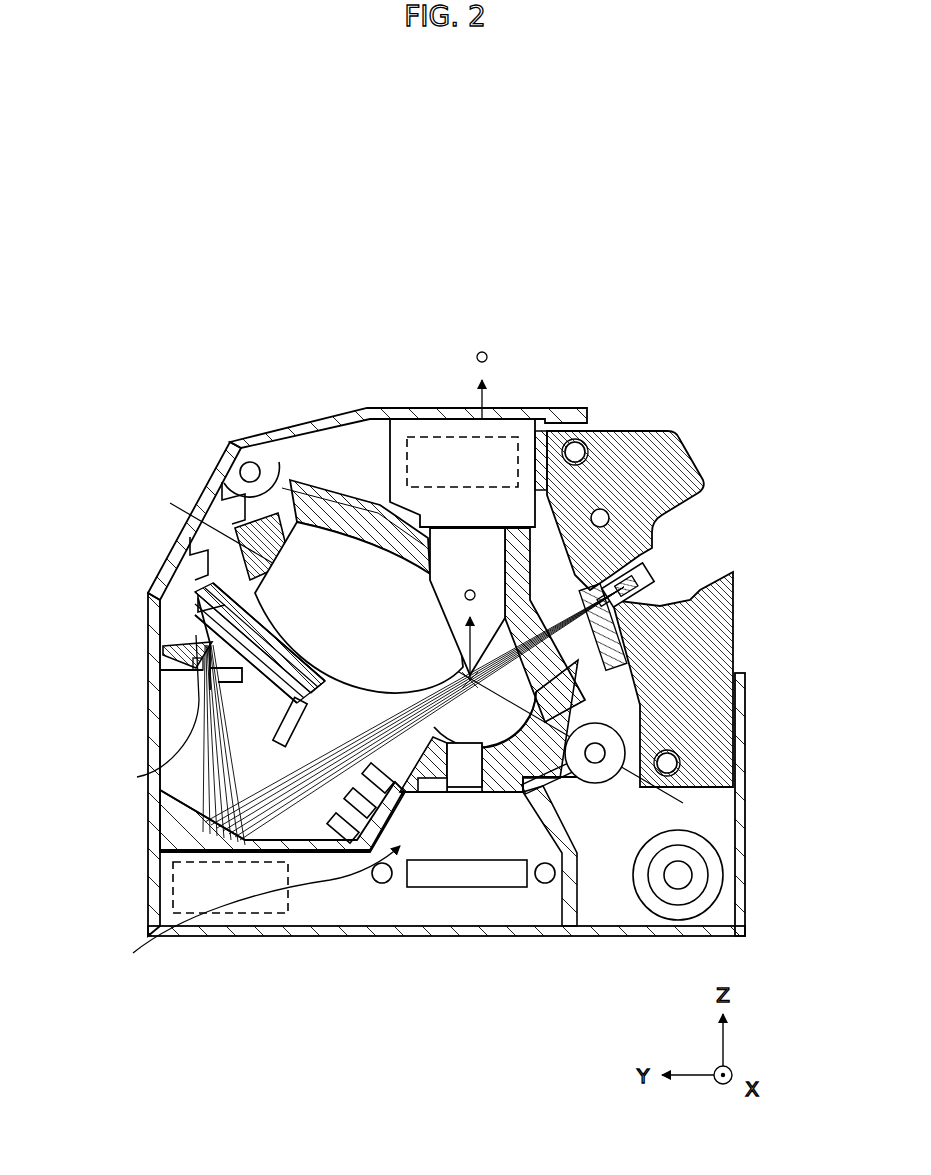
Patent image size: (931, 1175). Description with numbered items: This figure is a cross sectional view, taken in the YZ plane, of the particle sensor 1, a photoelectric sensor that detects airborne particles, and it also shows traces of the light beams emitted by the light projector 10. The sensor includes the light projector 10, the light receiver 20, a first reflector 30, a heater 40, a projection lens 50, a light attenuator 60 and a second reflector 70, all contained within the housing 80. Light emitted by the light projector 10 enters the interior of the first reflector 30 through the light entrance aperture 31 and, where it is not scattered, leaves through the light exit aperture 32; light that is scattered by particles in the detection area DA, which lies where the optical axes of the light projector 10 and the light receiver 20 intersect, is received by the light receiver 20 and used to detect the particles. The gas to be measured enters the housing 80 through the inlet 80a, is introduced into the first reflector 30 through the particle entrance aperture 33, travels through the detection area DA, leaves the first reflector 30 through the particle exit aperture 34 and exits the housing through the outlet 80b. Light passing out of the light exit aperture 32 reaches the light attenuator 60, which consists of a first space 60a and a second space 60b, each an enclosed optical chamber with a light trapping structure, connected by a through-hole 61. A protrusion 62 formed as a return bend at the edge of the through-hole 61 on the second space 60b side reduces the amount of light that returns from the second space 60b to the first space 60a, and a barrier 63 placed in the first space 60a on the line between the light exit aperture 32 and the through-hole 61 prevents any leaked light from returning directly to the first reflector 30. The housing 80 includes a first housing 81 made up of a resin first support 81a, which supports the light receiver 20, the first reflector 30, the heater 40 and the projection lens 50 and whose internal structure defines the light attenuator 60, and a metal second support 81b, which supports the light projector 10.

The particle sensor 1 is at (760, 413).
The light projector 10 is at (652, 566).
The light receiver 20 is at (230, 562).
The first reflector 30 is at (348, 515).
The light entrance aperture 31 is at (553, 488).
The light exit aperture 32 is at (422, 795).
The particle entrance aperture 33 is at (465, 790).
The particle exit aperture 34 is at (452, 538).
The heater 40 is at (410, 882).
The projection lens 50 is at (578, 548).
The light attenuator 60 is at (145, 680).
The first space 60a is at (139, 730).
The second space 60b is at (176, 639).
The through-hole 61 is at (152, 712).
The protrusion 62 is at (190, 650).
The barrier 63 is at (175, 800).
The second reflector 70 is at (250, 837).
The housing 80 is at (496, 672).
The inlet 80a is at (238, 917).
The outlet 80b is at (500, 435).
The first housing 81 is at (723, 754).
The first support 81a is at (738, 828).
The second support 81b is at (700, 679).
The detection area DA is at (455, 677).